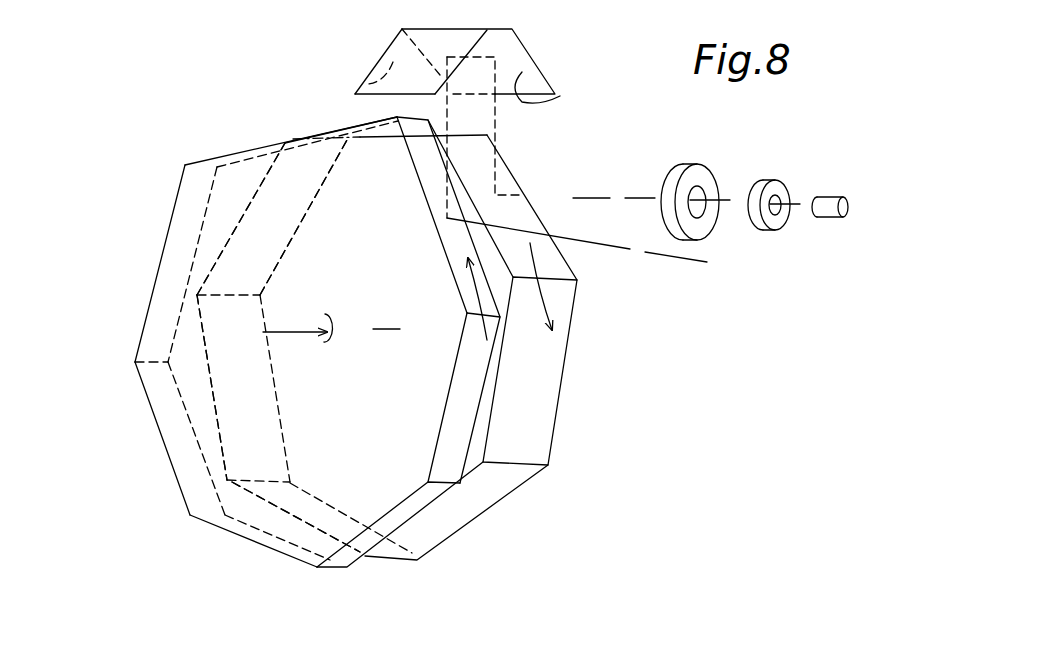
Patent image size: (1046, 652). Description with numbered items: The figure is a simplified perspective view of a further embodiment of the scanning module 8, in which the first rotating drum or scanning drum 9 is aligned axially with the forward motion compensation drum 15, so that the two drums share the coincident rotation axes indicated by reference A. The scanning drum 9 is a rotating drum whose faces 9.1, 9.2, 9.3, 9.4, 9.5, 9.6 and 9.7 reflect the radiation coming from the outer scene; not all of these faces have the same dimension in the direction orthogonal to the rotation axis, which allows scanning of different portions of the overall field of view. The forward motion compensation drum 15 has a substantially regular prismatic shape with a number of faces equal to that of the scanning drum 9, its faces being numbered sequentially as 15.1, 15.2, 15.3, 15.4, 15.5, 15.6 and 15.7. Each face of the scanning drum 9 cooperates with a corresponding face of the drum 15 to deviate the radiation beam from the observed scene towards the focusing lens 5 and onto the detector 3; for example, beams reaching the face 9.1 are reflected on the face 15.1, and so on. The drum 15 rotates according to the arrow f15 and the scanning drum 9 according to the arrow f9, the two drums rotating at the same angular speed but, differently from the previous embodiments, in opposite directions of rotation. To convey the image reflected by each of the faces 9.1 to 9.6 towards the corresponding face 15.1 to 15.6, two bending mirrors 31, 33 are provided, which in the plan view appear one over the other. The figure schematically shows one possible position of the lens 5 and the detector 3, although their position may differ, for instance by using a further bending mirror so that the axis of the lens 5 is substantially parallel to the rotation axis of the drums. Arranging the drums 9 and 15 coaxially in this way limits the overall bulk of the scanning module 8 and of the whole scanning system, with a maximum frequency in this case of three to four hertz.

The scanning module 8 is at (557, 533).
The first rotating drum 9 is at (130, 347).
The face of the rotating drum 9.1 is at (170, 281).
The face of the rotating drum 9.2 is at (182, 466).
The face of the rotating drum 9.3 is at (285, 540).
The face of the rotating drum 9.4 is at (386, 524).
The face of the rotating drum 9.5 is at (450, 430).
The face of the rotating drum 9.6 is at (437, 180).
The face of the rotating drum 9.7 is at (255, 158).
The forward motion compensation drum 15 is at (556, 451).
The face of the forward motion compensation drum 15.1 is at (258, 232).
The face of the forward motion compensation drum 15.2 is at (233, 395).
The face of the forward motion compensation drum 15.3 is at (287, 508).
The face of the forward motion compensation drum 15.4 is at (449, 525).
The face of the forward motion compensation drum 15.5 is at (545, 388).
The face of the forward motion compensation drum 15.6 is at (505, 188).
The face of the forward motion compensation drum 15.7 is at (370, 115).
The bending mirror 31 is at (362, 81).
The bending mirror 33 is at (560, 96).
The focusing lens 5 is at (707, 178).
The detector 3 is at (826, 200).
The rotation axes A is at (320, 346).
The arrow of rotation of the scanning drum f9 is at (480, 293).
The arrow of rotation of the forward motion compensation drum f15 is at (545, 263).